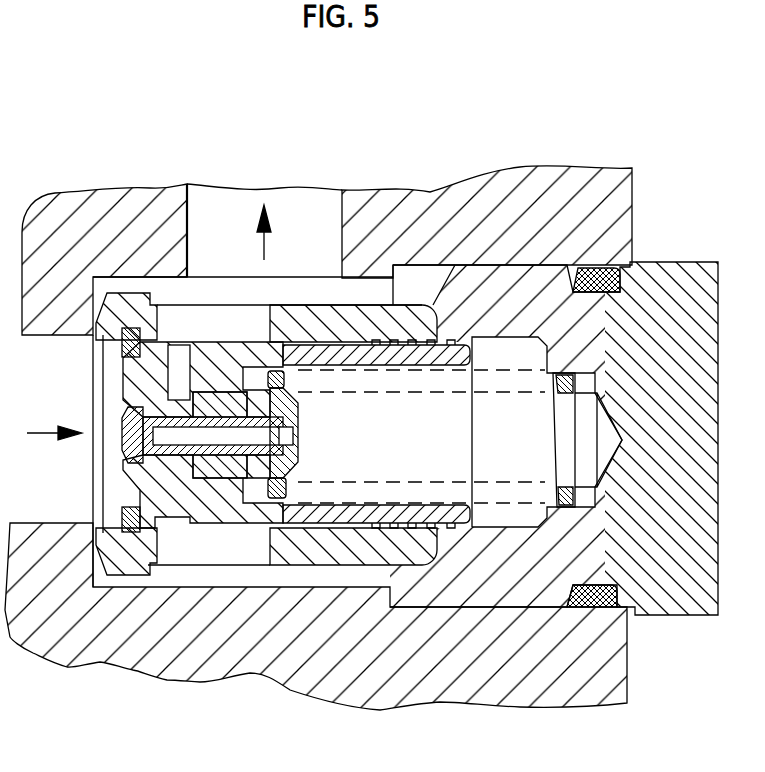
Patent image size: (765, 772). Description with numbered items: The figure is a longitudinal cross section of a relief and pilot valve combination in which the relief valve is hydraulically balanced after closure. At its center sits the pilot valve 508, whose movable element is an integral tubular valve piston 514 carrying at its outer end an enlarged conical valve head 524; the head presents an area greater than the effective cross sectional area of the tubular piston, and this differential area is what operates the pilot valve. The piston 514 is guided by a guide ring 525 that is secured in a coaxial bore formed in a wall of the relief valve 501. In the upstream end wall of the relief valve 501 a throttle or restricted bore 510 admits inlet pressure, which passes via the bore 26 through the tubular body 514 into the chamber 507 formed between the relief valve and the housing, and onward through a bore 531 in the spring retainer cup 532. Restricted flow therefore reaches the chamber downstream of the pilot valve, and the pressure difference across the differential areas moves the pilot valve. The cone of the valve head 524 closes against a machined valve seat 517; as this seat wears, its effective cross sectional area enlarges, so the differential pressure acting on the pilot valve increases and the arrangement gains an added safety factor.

The pilot valve 508 is at (207, 486).
The tubular valve piston 514 is at (279, 395).
The conical valve head 524 is at (176, 405).
The restricted bore 510 is at (118, 400).
The valve seat 517 is at (125, 405).
The guide ring 525 is at (224, 407).
The bore 26 is at (256, 430).
The spring retainer cup 532 is at (297, 407).
The bore 531 is at (293, 437).
The relief valve 501 is at (420, 515).
The chamber 507 is at (522, 435).